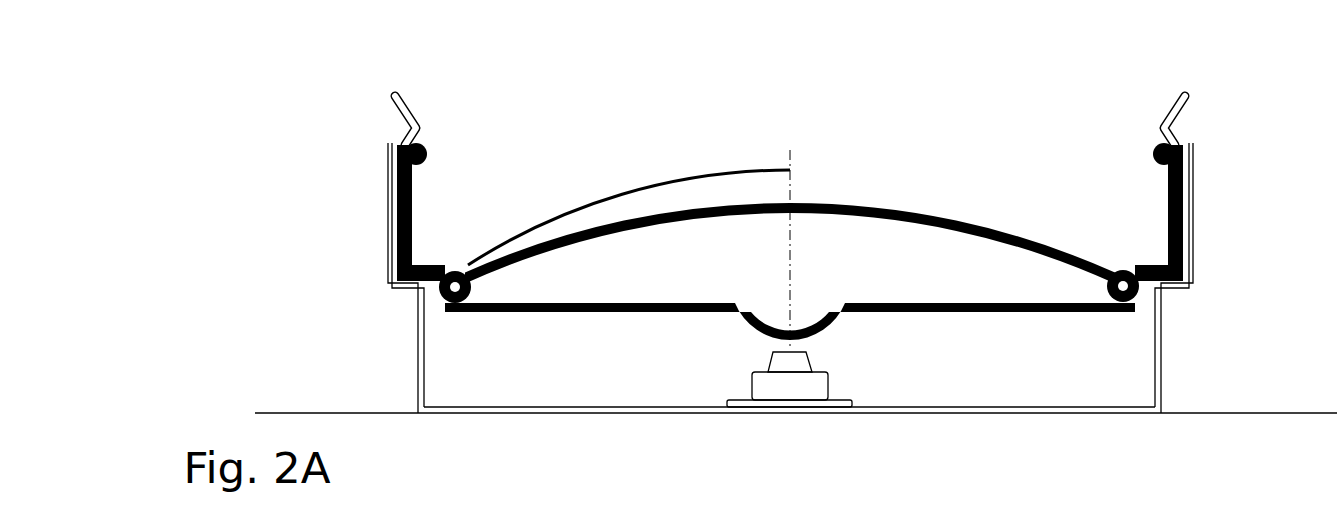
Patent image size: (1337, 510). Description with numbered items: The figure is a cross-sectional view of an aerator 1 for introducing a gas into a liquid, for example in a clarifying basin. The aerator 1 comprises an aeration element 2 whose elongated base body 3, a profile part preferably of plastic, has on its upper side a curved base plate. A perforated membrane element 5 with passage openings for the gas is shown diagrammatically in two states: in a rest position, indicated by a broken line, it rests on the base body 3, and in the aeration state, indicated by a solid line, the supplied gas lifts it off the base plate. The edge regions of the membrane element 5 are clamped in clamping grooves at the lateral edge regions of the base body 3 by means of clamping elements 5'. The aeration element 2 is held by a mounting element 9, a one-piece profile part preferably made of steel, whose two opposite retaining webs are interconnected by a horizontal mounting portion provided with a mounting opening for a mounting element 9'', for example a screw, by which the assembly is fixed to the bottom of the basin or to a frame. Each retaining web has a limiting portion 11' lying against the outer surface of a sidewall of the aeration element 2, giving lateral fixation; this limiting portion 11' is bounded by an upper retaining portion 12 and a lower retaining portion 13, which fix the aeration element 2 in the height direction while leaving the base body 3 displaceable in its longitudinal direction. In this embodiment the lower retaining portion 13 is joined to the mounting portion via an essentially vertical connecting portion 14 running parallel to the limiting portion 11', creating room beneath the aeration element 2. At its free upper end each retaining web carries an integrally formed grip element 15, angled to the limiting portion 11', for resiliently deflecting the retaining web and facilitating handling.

The aerator 1 is at (1222, 163).
The aeration element 2 is at (958, 197).
The base body 3 is at (1062, 257).
The membrane element 5 is at (629, 184).
The clamping elements 5' is at (789, 254).
The mounting element 9 is at (802, 278).
The mounting element (screw) 9'' is at (809, 411).
The limiting portion 11' is at (837, 278).
The upper retaining portion 12 is at (815, 155).
The lower retaining portion 13 is at (1172, 290).
The connecting portion 14 is at (1157, 375).
The grip element 15 is at (407, 108).